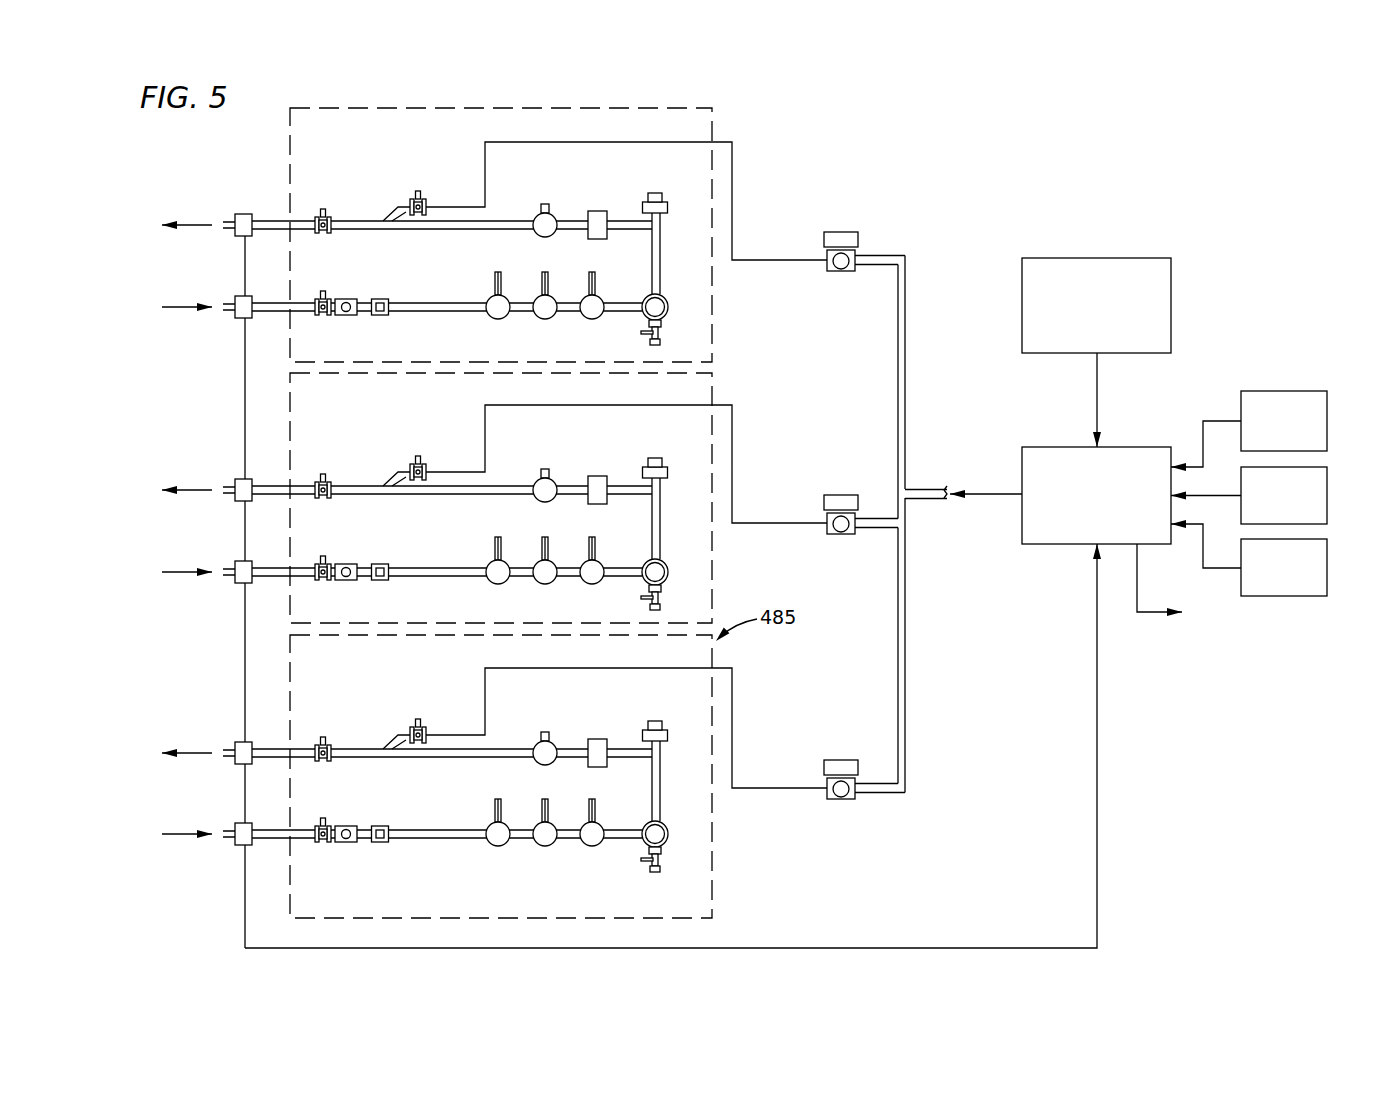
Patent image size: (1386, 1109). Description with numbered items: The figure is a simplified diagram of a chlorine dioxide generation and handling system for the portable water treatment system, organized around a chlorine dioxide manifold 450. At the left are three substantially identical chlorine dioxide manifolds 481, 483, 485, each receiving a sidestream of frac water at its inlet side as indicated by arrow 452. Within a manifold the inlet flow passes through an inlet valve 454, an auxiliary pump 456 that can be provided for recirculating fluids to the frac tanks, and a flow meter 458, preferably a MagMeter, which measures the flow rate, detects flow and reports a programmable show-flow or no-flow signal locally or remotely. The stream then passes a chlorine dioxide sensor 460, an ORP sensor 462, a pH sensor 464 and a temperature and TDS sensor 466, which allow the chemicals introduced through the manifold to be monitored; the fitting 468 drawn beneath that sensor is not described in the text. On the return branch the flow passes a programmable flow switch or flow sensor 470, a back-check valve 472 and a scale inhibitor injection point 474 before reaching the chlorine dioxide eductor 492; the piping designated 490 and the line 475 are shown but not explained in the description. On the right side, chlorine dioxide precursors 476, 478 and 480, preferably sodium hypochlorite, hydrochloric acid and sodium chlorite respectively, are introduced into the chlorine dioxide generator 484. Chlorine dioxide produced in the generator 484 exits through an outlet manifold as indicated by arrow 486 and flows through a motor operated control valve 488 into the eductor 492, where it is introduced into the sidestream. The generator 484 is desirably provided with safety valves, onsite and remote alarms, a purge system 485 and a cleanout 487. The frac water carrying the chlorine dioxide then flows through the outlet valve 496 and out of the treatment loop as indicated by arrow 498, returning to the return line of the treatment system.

The chlorine dioxide manifold 450 is at (222, 167).
The sidestream inlet arrow 452 is at (183, 838).
The inlet valve 454 is at (322, 845).
The auxiliary pump 456 is at (345, 823).
The flow meter 458 is at (380, 846).
The chlorine dioxide sensor 460 is at (497, 846).
The ORP sensor 462 is at (548, 845).
The pH sensor 464 is at (590, 846).
The temperature and TDS sensor 466 is at (668, 841).
The drain valve 468 is at (655, 872).
The flow sensor 470 is at (660, 720).
The back-check valve 472 is at (603, 740).
The scale inhibitor injection point 474 is at (538, 745).
The return line 475 is at (888, 947).
The chlorine dioxide precursor 476 is at (1249, 431).
The chlorine dioxide precursor 478 is at (1249, 495).
The chlorine dioxide precursor 480 is at (1249, 558).
The chlorine dioxide manifold 481 is at (718, 116).
The chlorine dioxide manifold 483 is at (720, 370).
The chlorine dioxide generator 484 is at (1038, 447).
The chlorine dioxide manifold 485 is at (1068, 258).
The generator outlet arrow 486 is at (1000, 494).
The cleanout 487 is at (1145, 615).
The motor operated control valve 488 is at (832, 760).
The bypass line 490 is at (485, 694).
The chlorine dioxide eductor 492 is at (418, 725).
The outlet valve 496 is at (323, 745).
The return flow arrow 498 is at (208, 748).